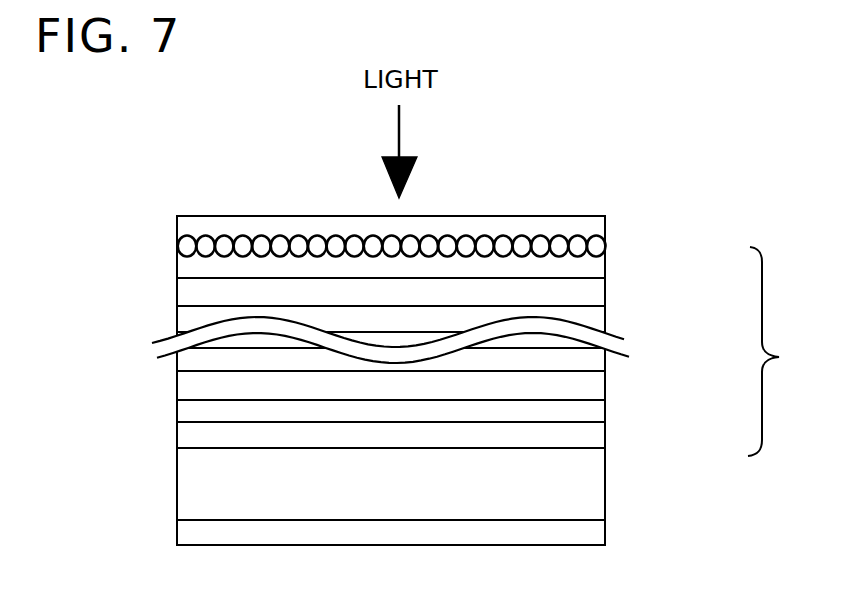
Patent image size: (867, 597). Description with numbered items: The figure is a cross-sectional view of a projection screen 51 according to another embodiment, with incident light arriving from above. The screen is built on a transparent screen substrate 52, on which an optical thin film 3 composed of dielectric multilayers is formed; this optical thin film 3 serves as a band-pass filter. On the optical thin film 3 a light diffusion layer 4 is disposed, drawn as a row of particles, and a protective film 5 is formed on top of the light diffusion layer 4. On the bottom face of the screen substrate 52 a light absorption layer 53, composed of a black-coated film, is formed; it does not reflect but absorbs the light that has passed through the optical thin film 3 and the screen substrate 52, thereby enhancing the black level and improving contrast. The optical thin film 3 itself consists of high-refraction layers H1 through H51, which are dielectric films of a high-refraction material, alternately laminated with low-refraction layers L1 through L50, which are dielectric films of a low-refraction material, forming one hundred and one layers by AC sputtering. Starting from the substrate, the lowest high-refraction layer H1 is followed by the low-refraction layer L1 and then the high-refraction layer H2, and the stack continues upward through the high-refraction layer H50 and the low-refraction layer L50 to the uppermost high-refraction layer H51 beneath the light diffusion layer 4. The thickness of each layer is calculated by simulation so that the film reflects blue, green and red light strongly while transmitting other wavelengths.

The projection screen 51 is at (475, 167).
The protective film 5 is at (545, 218).
The light diffusion layer 4 is at (597, 247).
The high-refraction layer H51 is at (579, 270).
The low-refraction layer L50 is at (583, 294).
The high-refraction layer H50 is at (593, 317).
The optical thin film 3 is at (777, 351).
The high-refraction layer H2 is at (578, 386).
The low-refraction layer L1 is at (578, 410).
The high-refraction layer H1 is at (578, 437).
The screen substrate 52 is at (578, 493).
The light absorption layer 53 is at (583, 533).